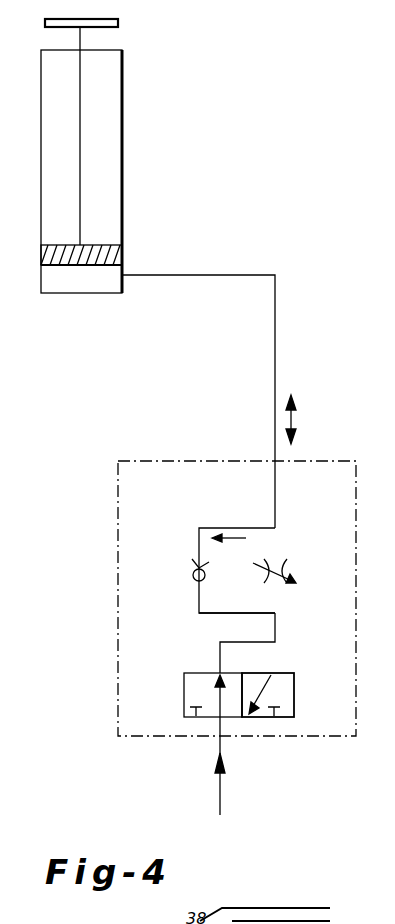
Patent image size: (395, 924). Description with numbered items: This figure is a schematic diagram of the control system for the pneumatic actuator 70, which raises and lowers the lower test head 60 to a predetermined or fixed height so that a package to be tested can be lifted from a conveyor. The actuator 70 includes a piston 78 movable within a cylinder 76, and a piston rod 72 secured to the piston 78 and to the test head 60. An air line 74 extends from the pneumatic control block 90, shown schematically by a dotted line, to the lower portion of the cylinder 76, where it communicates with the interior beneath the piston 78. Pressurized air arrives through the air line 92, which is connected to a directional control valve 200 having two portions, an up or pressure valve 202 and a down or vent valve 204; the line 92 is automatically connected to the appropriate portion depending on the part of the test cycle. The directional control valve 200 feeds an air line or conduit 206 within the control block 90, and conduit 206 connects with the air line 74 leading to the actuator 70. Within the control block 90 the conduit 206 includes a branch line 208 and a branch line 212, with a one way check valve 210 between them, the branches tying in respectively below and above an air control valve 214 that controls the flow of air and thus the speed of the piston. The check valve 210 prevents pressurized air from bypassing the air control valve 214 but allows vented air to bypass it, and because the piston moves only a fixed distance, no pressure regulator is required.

The lower test head 60 is at (50, 32).
The pneumatic actuator 70 is at (97, 156).
The piston rod 72 is at (84, 40).
The air line 74 is at (275, 378).
The cylinder 76 is at (124, 128).
The piston 78 is at (40, 258).
The pneumatic control block 90 is at (117, 560).
The air line 92 is at (220, 788).
The directional control valve 200 is at (241, 679).
The up or pressure valve 202 is at (184, 700).
The down or vent valve 204 is at (292, 690).
The air line or conduit 206 is at (279, 631).
The branch line 208 is at (236, 615).
The one way check valve 210 is at (192, 566).
The branch line 212 is at (199, 538).
The air control valve 214 is at (282, 569).